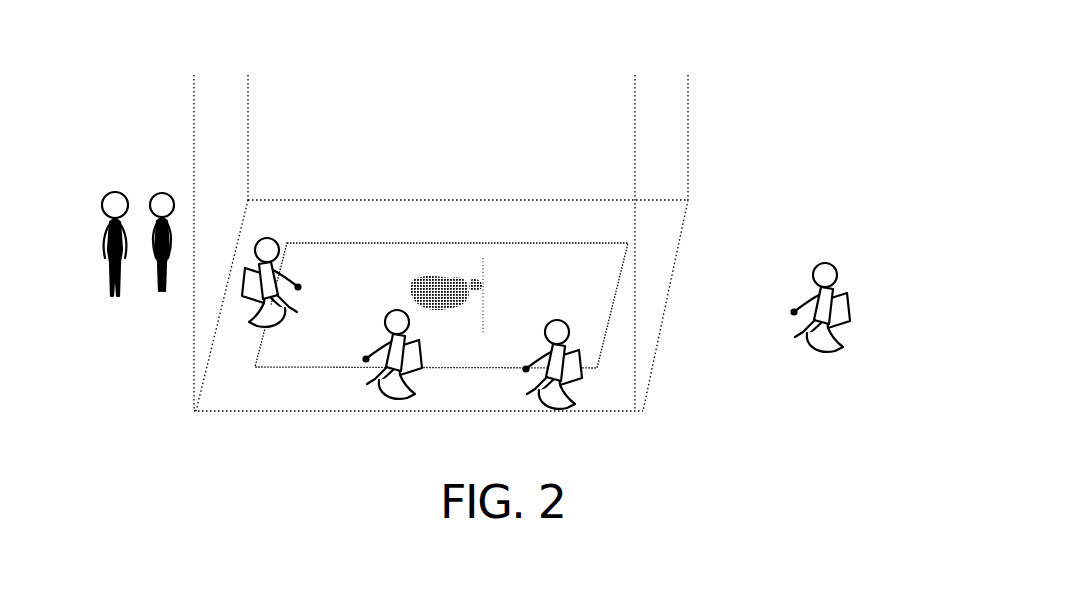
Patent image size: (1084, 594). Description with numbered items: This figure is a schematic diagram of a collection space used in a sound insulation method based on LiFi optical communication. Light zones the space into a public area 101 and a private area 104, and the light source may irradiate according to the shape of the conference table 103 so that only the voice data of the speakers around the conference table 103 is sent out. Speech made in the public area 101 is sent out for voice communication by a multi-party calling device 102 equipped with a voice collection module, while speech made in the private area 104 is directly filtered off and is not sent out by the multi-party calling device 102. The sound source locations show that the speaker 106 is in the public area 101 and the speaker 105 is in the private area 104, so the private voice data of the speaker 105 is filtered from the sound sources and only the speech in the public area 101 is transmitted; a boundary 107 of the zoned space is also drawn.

The room / meeting space 101 is at (483, 143).
The projected content / display object 102 is at (470, 300).
The table 103 is at (628, 243).
The area outside the room 104 is at (775, 190).
The persons outside the room 105 is at (95, 248).
The seated participants 106 is at (365, 365).
The wall of the room 107 is at (665, 320).